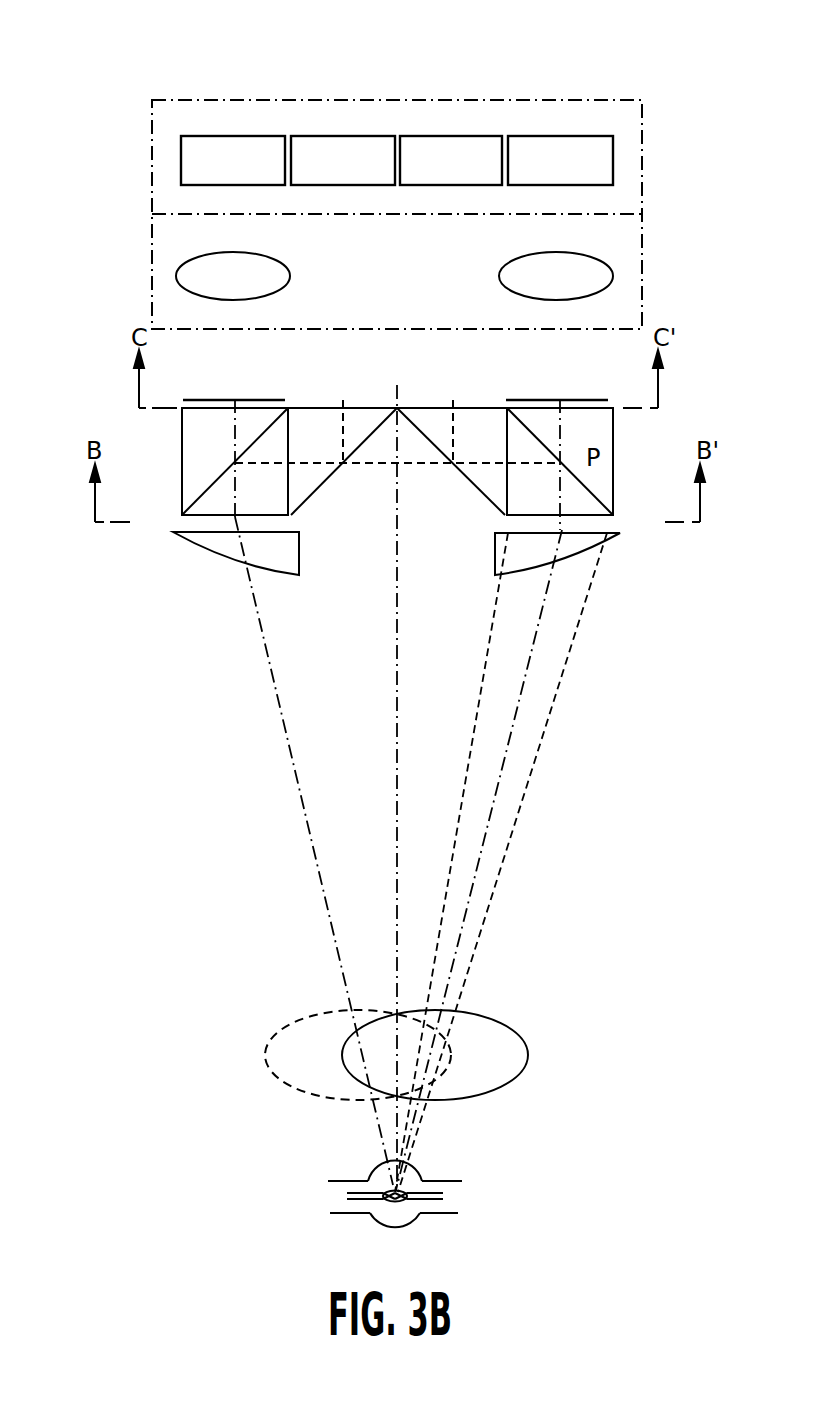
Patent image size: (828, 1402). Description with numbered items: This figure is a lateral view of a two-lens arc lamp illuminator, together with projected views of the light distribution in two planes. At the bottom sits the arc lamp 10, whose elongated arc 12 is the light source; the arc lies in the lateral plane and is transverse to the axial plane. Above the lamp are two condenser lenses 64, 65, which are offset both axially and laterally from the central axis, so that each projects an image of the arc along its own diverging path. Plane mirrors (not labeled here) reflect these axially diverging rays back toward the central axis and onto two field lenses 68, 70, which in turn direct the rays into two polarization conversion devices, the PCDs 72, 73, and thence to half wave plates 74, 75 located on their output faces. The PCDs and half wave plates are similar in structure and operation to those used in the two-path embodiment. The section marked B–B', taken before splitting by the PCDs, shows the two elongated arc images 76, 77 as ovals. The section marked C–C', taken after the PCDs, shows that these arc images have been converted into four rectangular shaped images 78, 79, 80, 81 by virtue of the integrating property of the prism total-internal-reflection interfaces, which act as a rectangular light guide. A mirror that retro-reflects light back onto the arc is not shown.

The arc lamp 10 is at (453, 1215).
The elongated arc 12 is at (448, 1197).
The condenser lens 64 is at (297, 1088).
The condenser lens 65 is at (520, 1078).
The field lens 68 is at (580, 553).
The field lens 70 is at (203, 548).
The PCD 72 is at (632, 422).
The PCD 73 is at (158, 422).
The half wave plate 74 is at (561, 399).
The half wave plate 75 is at (245, 399).
The elongated arc image 76 is at (600, 262).
The elongated arc image 77 is at (190, 263).
The rectangular shaped image 78 is at (613, 162).
The rectangular shaped image 79 is at (463, 136).
The rectangular shaped image 80 is at (330, 136).
The rectangular shaped image 81 is at (181, 160).